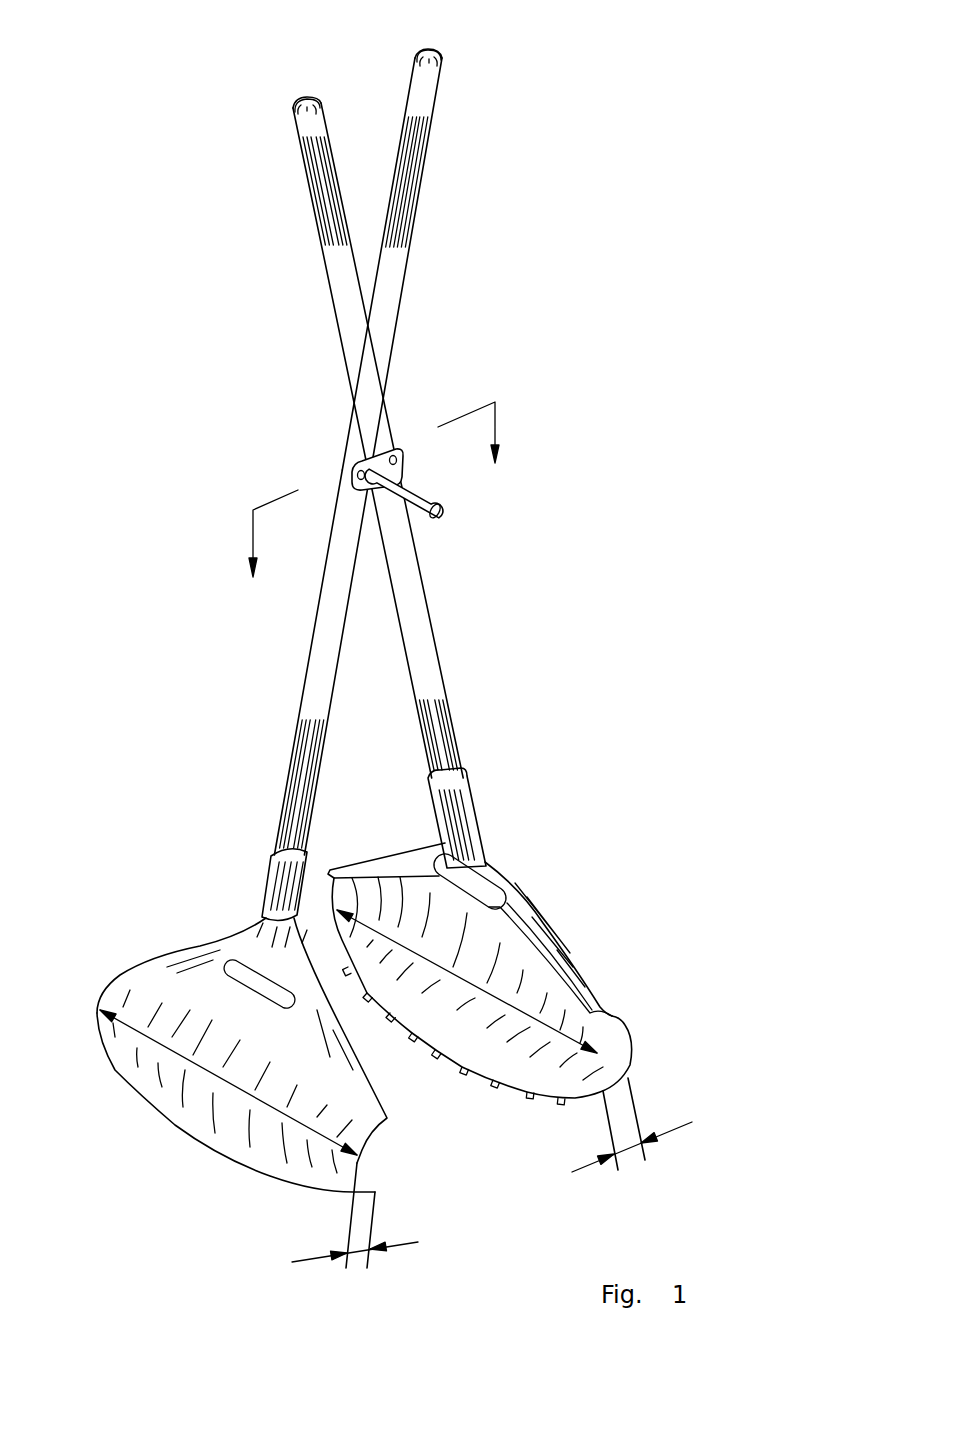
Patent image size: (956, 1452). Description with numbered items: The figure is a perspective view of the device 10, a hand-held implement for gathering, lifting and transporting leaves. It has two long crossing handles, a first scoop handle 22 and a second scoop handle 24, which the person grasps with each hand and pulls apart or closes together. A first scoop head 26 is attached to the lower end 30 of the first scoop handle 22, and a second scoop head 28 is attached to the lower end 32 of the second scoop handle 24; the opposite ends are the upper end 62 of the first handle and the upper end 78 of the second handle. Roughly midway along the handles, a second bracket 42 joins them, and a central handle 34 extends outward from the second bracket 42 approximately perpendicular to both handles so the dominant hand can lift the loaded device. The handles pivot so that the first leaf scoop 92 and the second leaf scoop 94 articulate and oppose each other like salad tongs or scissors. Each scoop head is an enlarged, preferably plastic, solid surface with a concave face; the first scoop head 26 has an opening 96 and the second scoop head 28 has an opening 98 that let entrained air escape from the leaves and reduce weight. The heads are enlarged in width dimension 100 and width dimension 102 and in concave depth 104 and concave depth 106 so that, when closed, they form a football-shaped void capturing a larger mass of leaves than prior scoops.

The device 10 is at (437, 332).
The first scoop handle 22 is at (340, 298).
The second scoop handle 24 is at (393, 292).
The first scoop head 26 is at (593, 995).
The second scoop head 28 is at (263, 1157).
The lower end of the first scoop handle 30 is at (472, 820).
The lower end of the second scoop handle 32 is at (277, 883).
The central handle 34 is at (437, 495).
The second bracket 42 is at (390, 415).
The upper end of the first leaf scoop handle 62 is at (293, 103).
The upper end of the second leaf scoop handle 78 is at (442, 60).
The first leaf scoop 92 is at (440, 625).
The second leaf scoop 94 is at (315, 640).
The opening in first scoop head 96 is at (400, 877).
The opening in second scoop head 98 is at (165, 985).
The width dimension of first scoop head 100 is at (410, 1013).
The width dimension of second scoop head 102 is at (205, 1073).
The concave depth of first scoop head 104 is at (628, 1170).
The concave depth of second scoop head 106 is at (346, 1268).